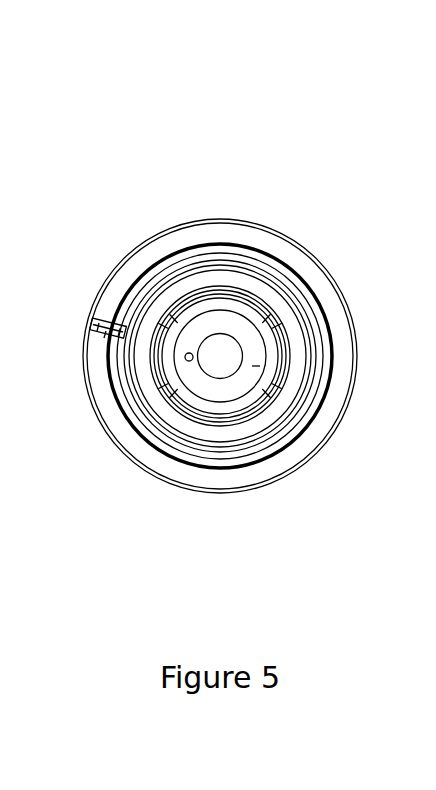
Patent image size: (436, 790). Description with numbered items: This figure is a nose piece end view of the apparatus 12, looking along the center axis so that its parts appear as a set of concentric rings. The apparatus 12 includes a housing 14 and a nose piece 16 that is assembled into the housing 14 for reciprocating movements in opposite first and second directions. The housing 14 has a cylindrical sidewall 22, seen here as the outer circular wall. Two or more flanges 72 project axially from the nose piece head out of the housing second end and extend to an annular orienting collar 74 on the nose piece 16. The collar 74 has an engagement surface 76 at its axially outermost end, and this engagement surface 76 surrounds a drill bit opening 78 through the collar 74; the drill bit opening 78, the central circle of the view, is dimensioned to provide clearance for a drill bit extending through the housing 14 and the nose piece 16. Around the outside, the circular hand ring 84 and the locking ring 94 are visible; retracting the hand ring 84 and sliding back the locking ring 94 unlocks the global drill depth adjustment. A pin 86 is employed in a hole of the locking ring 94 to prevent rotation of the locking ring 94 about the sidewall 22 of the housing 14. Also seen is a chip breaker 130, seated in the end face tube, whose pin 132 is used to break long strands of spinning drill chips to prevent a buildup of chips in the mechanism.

The apparatus 12 is at (222, 152).
The housing 14 is at (262, 246).
The nose piece 16 is at (270, 306).
The cylindrical sidewall 22 is at (328, 341).
The flanges 72 is at (167, 353).
The annular orienting collar 74 is at (188, 362).
The engagement surface 76 is at (222, 379).
The drill bit opening 78 is at (243, 381).
The circular hand ring 84 is at (146, 240).
The pin 86 is at (100, 336).
The locking ring 94 is at (117, 318).
The chip breaker 130 is at (302, 397).
The pin 132 is at (160, 392).